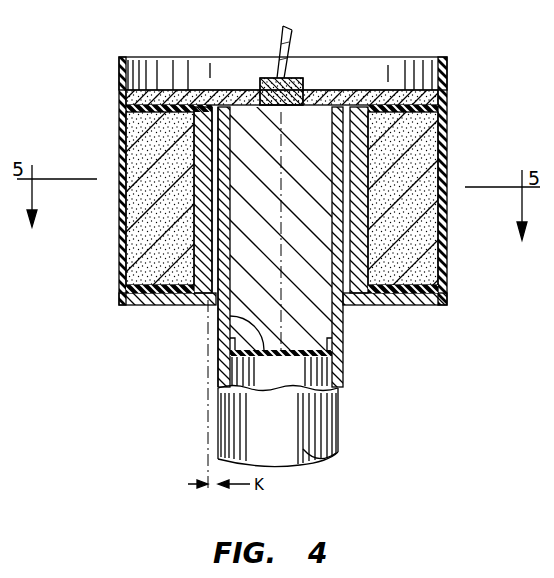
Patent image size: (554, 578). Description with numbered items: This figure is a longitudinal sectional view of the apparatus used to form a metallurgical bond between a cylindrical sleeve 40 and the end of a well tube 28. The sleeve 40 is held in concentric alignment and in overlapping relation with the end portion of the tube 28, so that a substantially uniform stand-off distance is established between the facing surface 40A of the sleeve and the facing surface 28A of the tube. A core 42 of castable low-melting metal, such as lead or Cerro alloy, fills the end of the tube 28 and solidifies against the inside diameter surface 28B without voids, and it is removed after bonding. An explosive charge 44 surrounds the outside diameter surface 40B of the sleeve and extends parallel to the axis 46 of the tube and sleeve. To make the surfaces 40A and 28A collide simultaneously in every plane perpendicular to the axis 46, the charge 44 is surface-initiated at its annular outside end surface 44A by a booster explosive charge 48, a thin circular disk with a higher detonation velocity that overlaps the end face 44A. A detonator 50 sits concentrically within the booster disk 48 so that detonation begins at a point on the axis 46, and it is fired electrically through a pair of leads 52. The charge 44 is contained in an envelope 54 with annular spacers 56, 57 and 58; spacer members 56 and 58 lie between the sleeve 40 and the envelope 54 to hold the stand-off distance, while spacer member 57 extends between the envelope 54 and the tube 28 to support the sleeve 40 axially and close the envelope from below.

The tube 28 is at (340, 430).
The facing surface of the tube 28A is at (214, 274).
The inside diameter surface of the tube 28B is at (279, 371).
The sleeve 40 is at (199, 303).
The facing surface of the sleeve 40A is at (215, 205).
The outside diameter surface of the sleeve 40B is at (193, 146).
The core 42 is at (316, 323).
The explosive charge 44 is at (128, 262).
The outside end surface of the explosive charge 44A is at (121, 95).
The axis 46 is at (281, 157).
The booster explosive charge 48 is at (200, 90).
The detonator 50 is at (300, 76).
The leads 52 is at (300, 47).
The envelope 54 is at (123, 240).
The spacer member 56 is at (423, 301).
The spacer member 57 is at (403, 305).
The spacer member 58 is at (446, 117).